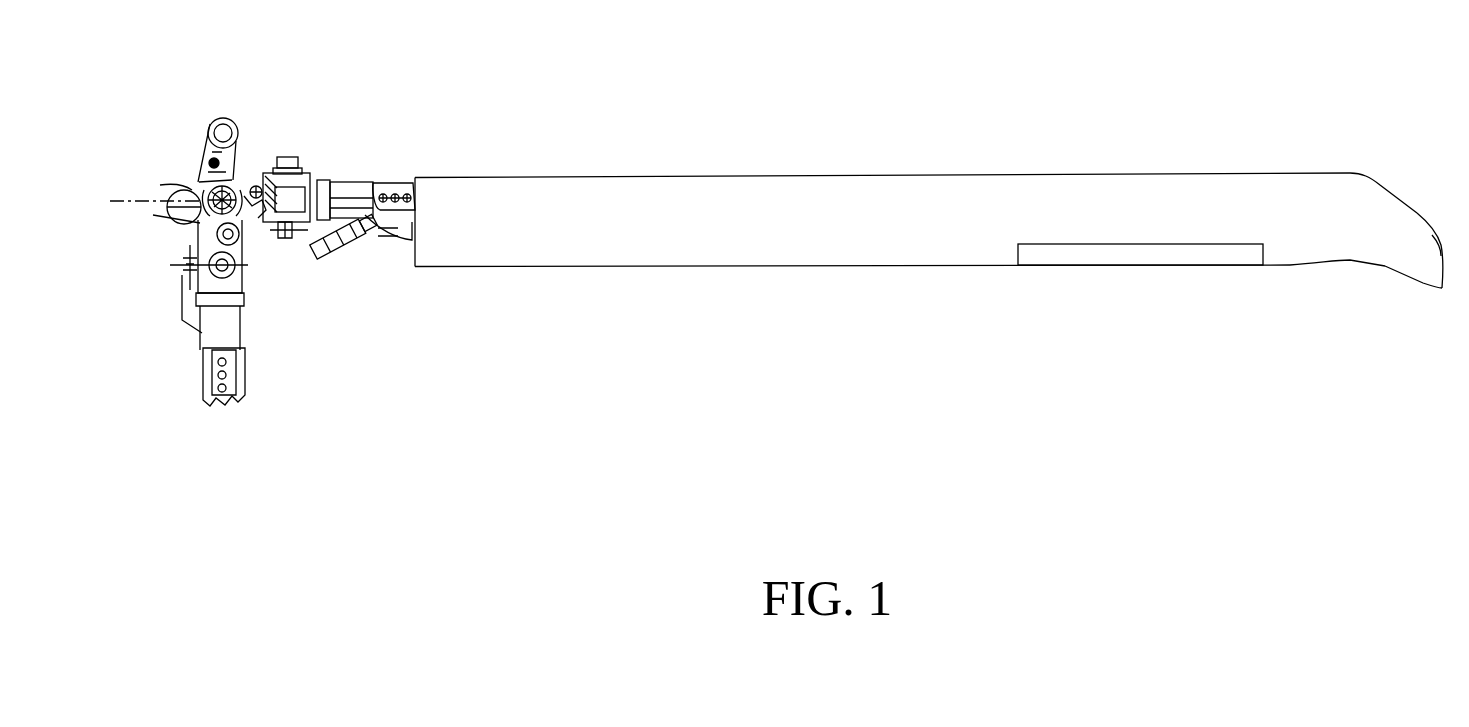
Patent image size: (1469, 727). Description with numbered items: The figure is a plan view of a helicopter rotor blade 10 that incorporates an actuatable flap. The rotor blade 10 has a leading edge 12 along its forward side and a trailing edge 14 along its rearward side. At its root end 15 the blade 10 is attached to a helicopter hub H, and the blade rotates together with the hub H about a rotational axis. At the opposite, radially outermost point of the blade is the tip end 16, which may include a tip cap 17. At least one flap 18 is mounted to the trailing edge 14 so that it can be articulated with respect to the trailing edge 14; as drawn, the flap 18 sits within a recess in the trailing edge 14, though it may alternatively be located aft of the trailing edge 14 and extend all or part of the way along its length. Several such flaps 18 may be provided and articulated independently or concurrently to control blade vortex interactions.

The rotor blade 10 is at (936, 259).
The leading edge 12 is at (623, 173).
The trailing edge 14 is at (762, 242).
The root end 15 is at (382, 187).
The tip end 16 is at (1370, 205).
The tip cap 17 is at (1407, 227).
The flap 18 is at (1122, 255).
The helicopter hub H is at (263, 130).